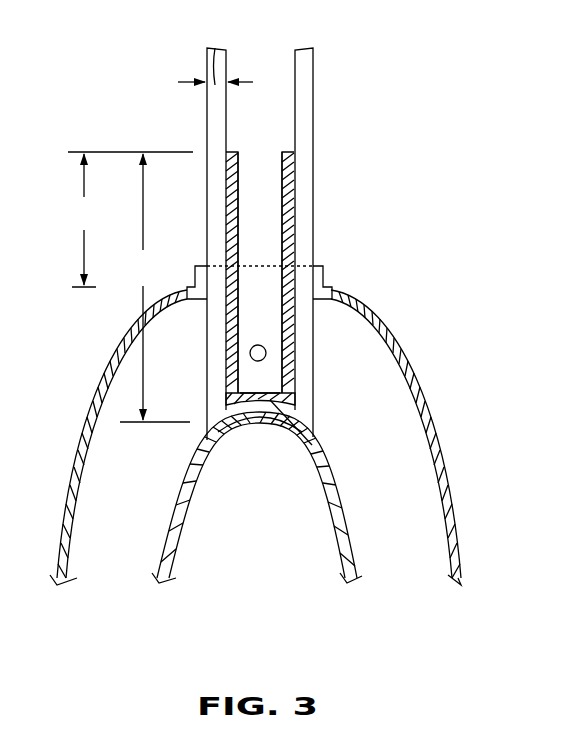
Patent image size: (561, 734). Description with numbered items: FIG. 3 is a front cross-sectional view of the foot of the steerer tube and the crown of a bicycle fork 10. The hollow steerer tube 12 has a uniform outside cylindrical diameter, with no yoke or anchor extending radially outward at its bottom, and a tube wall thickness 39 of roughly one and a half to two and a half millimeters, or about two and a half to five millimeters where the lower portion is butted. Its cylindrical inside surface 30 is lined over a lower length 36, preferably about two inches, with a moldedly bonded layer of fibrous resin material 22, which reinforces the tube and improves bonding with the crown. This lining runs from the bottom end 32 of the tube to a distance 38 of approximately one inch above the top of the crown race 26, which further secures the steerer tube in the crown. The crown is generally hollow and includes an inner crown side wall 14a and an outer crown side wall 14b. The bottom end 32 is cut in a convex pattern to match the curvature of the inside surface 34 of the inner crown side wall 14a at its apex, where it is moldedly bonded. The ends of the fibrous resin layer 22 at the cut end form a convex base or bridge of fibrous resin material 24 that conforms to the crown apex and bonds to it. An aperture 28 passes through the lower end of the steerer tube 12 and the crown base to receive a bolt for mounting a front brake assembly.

The bicycle fork 10 is at (189, 111).
The steerer tube 12 is at (309, 127).
The inner crown side wall 14a is at (337, 495).
The outer crown side wall 14b is at (400, 342).
The fibrous resin material layer 22 is at (298, 218).
The fibrous resin base layer 24 is at (250, 395).
The crown race 26 is at (327, 275).
The aperture 28 is at (268, 355).
The inside surface 30 is at (293, 110).
The bottom end 32 is at (312, 432).
The inside surface of inner crown side wall 34 is at (297, 392).
The length 36 is at (155, 288).
The distance 38 is at (130, 219).
The wall thickness 39 is at (215, 48).